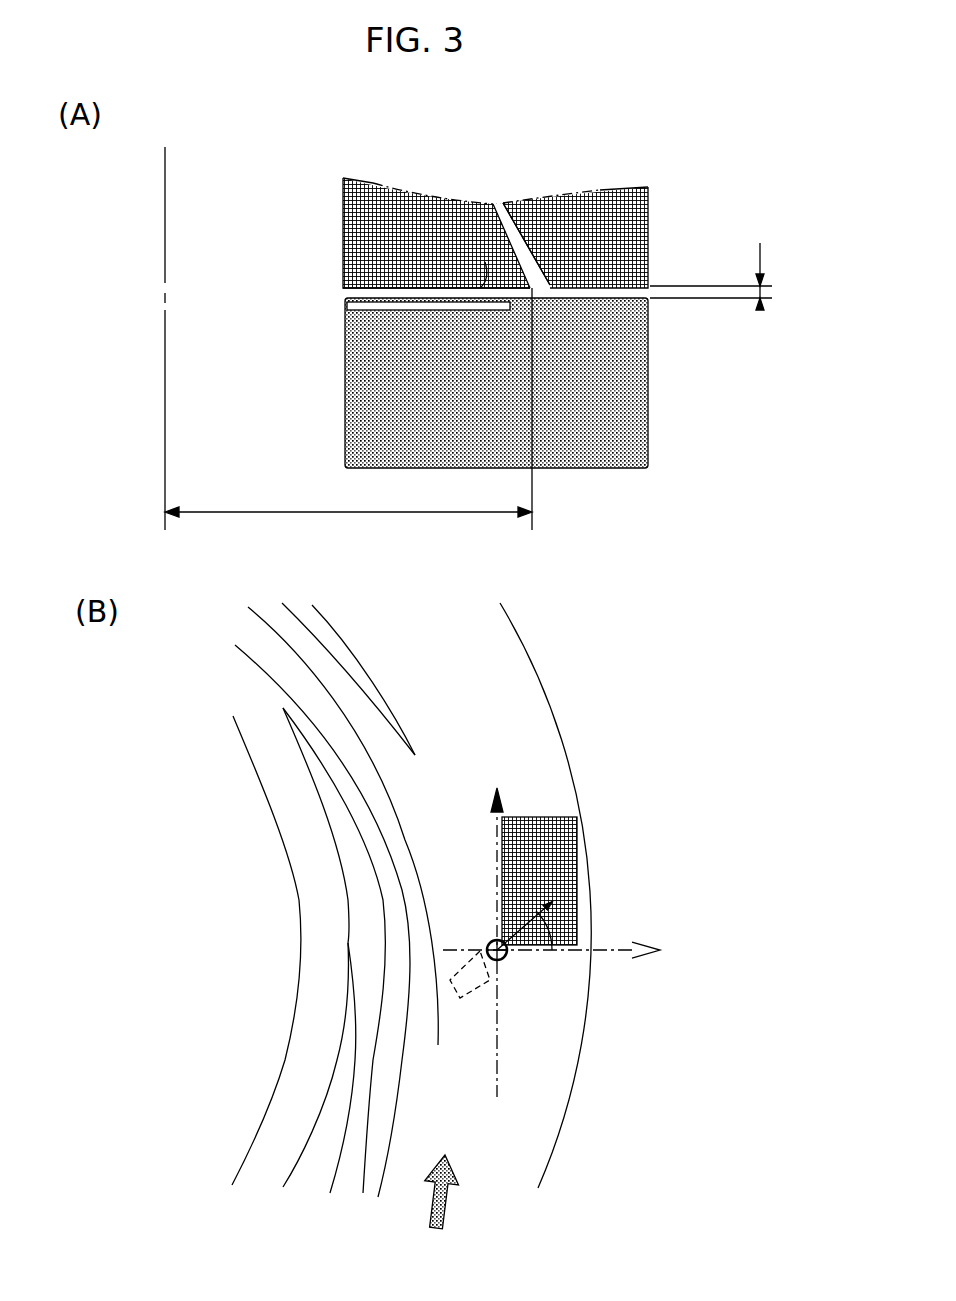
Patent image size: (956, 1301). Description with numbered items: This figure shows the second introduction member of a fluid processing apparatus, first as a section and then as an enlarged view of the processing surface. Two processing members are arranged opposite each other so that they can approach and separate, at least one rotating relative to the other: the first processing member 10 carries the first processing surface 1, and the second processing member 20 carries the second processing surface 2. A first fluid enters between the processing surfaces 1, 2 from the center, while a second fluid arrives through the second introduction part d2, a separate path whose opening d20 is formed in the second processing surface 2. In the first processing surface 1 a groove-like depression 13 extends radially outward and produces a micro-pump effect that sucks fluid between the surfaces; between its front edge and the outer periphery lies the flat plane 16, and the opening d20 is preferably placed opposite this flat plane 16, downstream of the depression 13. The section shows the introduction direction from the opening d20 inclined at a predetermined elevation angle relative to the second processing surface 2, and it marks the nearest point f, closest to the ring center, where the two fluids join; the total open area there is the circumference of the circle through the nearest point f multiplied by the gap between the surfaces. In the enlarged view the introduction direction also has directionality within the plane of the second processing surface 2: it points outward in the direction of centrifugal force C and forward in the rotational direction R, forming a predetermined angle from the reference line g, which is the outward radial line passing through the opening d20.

The first processing surface 1 is at (560, 298).
The second processing surface 2 is at (440, 287).
The first processing member 10 is at (347, 387).
The groove-like depression 13 is at (372, 313).
The flat plane 16 is at (437, 672).
The second processing member 20 is at (345, 227).
The second introduction part d2 is at (502, 235).
The opening of the second introduction part d20 is at (548, 287).
The nearest point f is at (531, 423).
The direction of centrifugal force C is at (568, 942).
The reference line g is at (607, 955).
The rotational direction R is at (454, 1192).